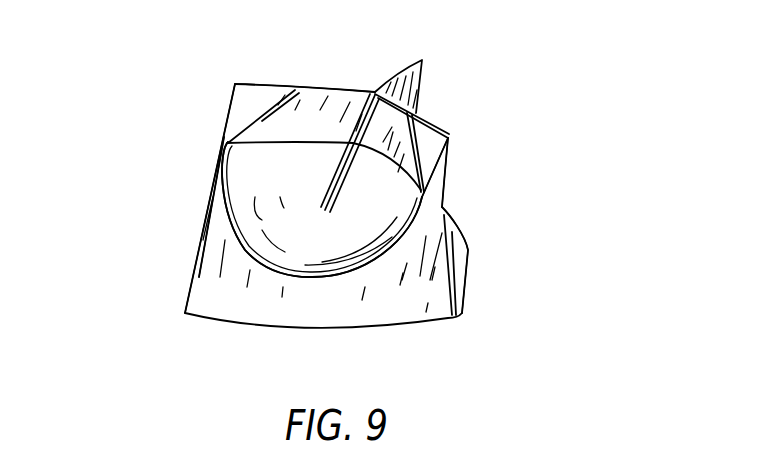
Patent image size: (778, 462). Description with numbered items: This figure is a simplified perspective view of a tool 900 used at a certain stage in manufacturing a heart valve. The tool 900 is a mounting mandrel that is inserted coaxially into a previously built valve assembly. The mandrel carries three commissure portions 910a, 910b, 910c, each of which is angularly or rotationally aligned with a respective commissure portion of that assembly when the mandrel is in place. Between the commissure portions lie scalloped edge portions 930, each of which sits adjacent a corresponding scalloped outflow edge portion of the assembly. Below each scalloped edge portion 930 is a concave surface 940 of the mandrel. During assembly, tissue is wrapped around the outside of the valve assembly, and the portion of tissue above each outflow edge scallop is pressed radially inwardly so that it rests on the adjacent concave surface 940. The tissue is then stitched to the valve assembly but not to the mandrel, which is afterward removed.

The tool 900 is at (570, 121).
The commissure portion 910a is at (232, 103).
The commissure portion 910b is at (443, 173).
The commissure portion 910c is at (421, 76).
The scalloped edge portion 930 is at (353, 270).
The concave surface 940 is at (242, 225).